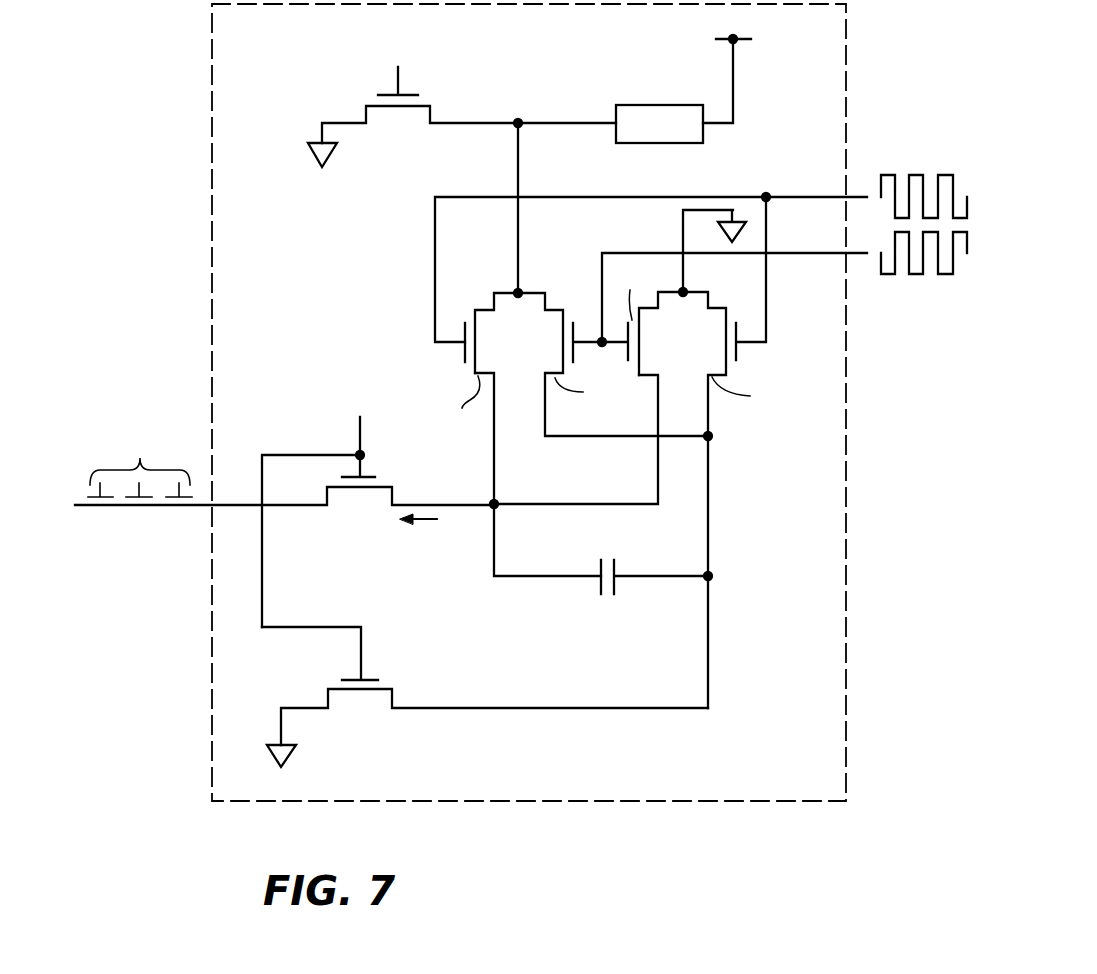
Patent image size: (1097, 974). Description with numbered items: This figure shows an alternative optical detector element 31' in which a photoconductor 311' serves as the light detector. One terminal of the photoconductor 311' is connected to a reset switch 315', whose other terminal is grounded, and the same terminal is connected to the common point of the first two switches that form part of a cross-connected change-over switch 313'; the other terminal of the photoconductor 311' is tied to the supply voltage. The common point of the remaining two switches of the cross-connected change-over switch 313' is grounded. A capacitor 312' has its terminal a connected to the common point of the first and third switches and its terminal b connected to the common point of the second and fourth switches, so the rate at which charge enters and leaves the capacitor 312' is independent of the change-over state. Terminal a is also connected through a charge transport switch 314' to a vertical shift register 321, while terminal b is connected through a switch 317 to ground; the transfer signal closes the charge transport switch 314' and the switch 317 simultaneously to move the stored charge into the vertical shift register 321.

The optical detector element 31' is at (568, 402).
The vertical shift register 321 is at (130, 514).
The reset switch 315' is at (413, 122).
The photoconductor 311' is at (654, 89).
The cross-connected change-over switch 313' is at (648, 415).
The capacitor 312' is at (632, 603).
The charge transport switch 314' is at (284, 522).
The switch 317 is at (372, 690).